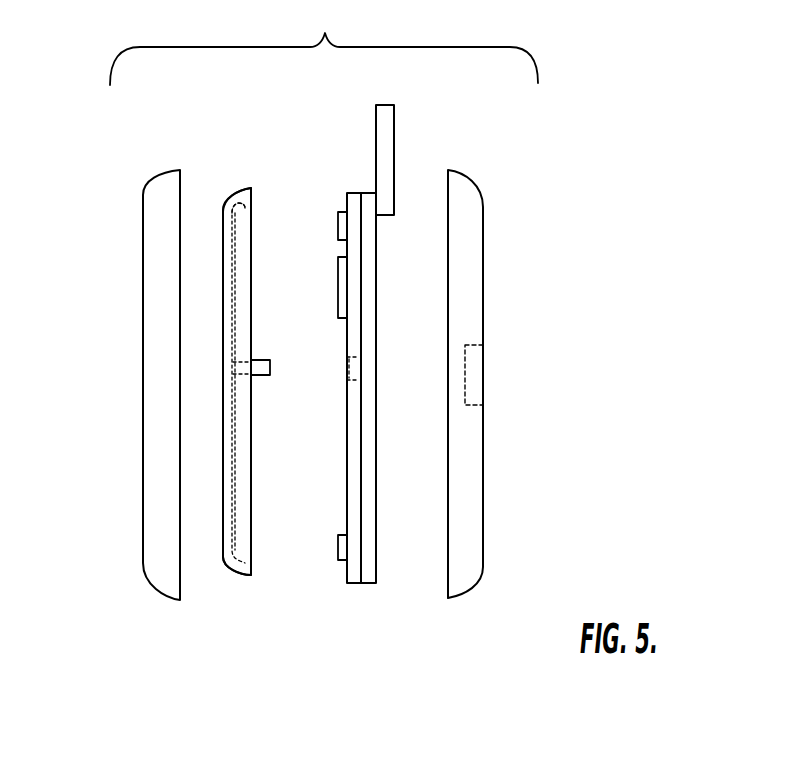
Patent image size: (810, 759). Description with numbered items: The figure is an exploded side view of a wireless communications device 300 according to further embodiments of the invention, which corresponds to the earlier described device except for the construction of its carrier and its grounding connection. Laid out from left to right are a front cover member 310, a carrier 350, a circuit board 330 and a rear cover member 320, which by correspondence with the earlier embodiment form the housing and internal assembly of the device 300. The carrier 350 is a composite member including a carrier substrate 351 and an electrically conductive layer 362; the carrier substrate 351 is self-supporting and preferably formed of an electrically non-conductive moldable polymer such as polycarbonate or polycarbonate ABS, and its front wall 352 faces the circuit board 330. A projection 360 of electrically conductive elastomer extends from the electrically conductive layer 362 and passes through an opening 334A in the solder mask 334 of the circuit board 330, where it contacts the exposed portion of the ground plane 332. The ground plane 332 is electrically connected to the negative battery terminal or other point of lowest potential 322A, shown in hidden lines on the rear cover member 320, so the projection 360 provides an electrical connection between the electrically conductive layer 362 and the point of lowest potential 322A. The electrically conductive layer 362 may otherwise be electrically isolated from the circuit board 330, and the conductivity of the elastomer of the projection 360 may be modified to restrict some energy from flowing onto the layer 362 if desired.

The wireless communications device 300 is at (587, 153).
The front housing 310 is at (155, 369).
The rear housing 320 is at (470, 503).
The point of lowest potential 322A is at (483, 365).
The circuit board 330 is at (378, 548).
The ground plane 332 is at (362, 568).
The solder mask 334 is at (348, 570).
The opening 334A is at (345, 373).
The carrier 350 is at (231, 594).
The carrier substrate 351 is at (217, 538).
The display top edge 352 is at (223, 210).
The projection 360 is at (270, 367).
The electrically conductive layer 362 is at (238, 239).